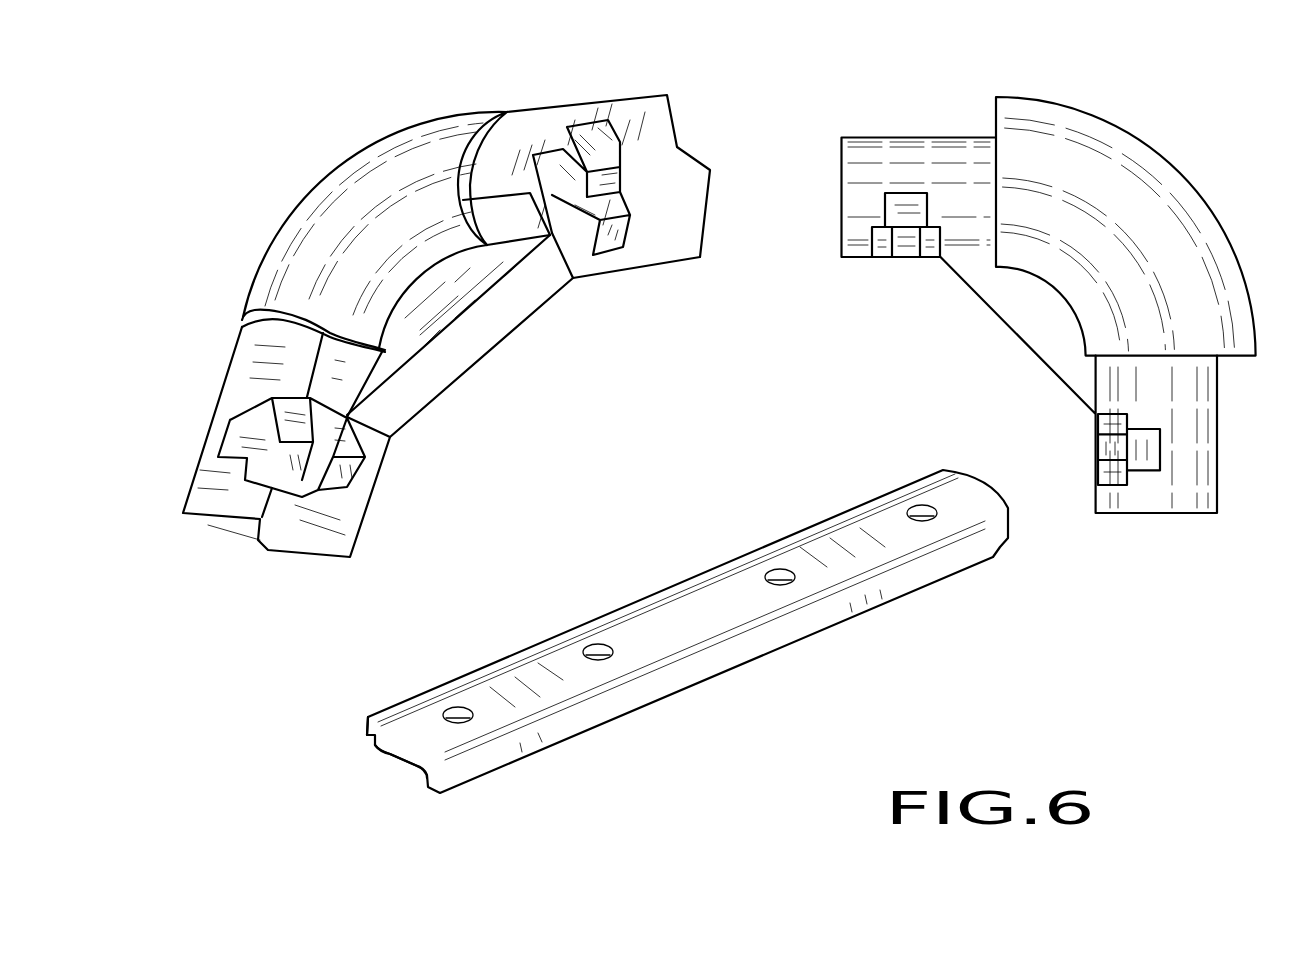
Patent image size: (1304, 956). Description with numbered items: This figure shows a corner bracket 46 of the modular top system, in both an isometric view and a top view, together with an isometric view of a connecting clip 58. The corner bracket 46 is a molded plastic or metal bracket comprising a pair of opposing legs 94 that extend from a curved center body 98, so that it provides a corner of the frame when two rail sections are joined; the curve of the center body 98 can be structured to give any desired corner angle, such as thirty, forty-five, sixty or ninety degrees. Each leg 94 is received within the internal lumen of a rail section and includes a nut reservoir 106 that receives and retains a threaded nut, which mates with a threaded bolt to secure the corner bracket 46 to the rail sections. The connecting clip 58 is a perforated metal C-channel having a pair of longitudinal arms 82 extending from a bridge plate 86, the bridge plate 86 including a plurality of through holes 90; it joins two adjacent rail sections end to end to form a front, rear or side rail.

The corner bracket 46 is at (702, 307).
The connecting clip 58 is at (672, 622).
The longitudinal arm 82 is at (383, 762).
The bridge plate 86 is at (692, 600).
The through hole 90 is at (458, 707).
The leg 94 is at (637, 113).
The curved center body 98 is at (340, 215).
The nut reservoir 106 is at (622, 237).